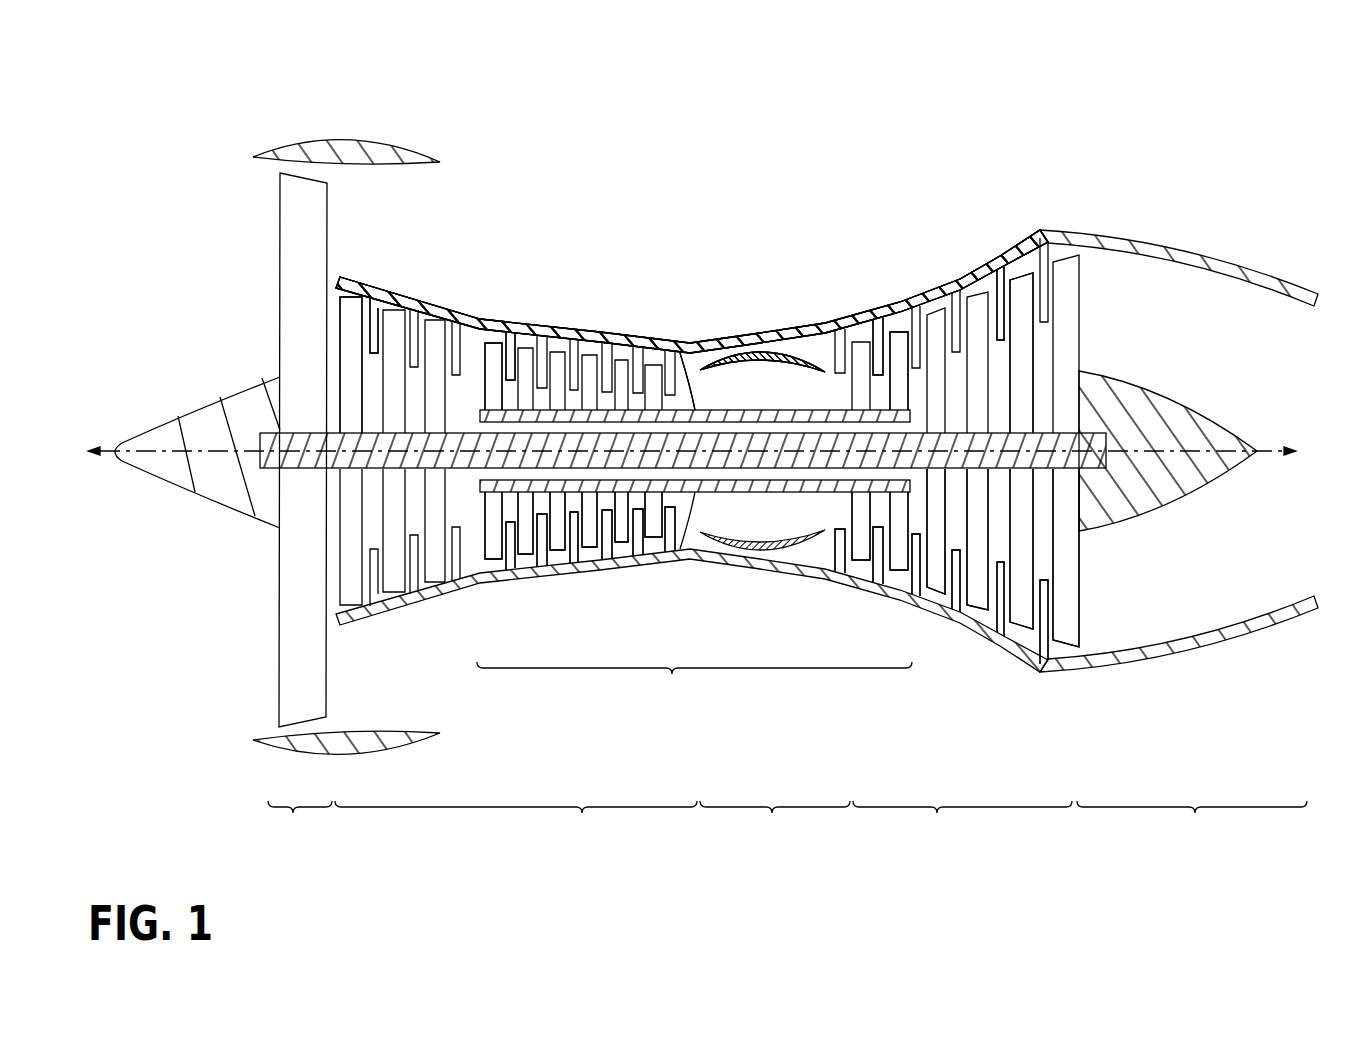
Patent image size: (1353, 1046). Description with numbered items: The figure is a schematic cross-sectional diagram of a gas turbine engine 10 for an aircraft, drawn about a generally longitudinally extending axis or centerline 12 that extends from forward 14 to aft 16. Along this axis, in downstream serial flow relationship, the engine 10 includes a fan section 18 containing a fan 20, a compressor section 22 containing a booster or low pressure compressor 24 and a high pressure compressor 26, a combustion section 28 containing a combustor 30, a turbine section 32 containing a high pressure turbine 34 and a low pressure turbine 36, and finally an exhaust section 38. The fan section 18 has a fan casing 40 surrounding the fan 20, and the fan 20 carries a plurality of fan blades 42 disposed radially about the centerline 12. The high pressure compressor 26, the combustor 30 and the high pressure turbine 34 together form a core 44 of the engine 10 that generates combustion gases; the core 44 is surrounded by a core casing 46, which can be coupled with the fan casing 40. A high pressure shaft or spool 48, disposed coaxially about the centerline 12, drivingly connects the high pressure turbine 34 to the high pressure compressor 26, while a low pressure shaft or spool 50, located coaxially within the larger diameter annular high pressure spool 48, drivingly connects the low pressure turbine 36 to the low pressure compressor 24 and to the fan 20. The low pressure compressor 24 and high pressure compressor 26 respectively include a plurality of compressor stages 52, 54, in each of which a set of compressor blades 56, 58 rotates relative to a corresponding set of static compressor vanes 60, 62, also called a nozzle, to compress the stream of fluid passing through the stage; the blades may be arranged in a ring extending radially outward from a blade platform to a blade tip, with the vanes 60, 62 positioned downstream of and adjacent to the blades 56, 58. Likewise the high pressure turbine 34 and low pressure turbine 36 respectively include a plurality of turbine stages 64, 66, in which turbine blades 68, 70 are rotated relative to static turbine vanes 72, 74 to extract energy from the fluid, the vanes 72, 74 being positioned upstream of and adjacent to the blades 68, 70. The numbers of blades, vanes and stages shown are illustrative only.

The gas turbine engine 10 is at (163, 73).
The centerline 12 is at (180, 452).
The forward 14 is at (76, 452).
The aft 16 is at (1307, 452).
The fan section 18 is at (300, 825).
The fan 20 is at (275, 235).
The compressor section 22 is at (516, 825).
The low pressure compressor 24 is at (468, 598).
The high pressure compressor 26 is at (631, 572).
The combustion section 28 is at (775, 825).
The combustor 30 is at (821, 345).
The turbine section 32 is at (962, 825).
The high pressure turbine 34 is at (835, 600).
The low pressure turbine 36 is at (965, 632).
The exhaust section 38 is at (1192, 825).
The fan casing 40 is at (348, 140).
The fan blades 42 is at (290, 668).
The core 44 is at (694, 686).
The core casing 46 is at (752, 352).
The high pressure spool 48 is at (693, 400).
The low pressure spool 50 is at (472, 400).
The compressor stages 52 is at (336, 262).
The compressor stages 54 is at (493, 334).
The compressor blades 56 is at (357, 303).
The compressor blades 58 is at (510, 355).
The static compressor vanes 60 is at (373, 303).
The static compressor vanes 62 is at (530, 360).
The turbine stages 64 is at (870, 303).
The turbine stages 66 is at (998, 243).
The turbine blades 68 is at (898, 322).
The turbine blades 70 is at (1020, 298).
The static turbine vanes 72 is at (878, 320).
The static turbine vanes 74 is at (1000, 282).